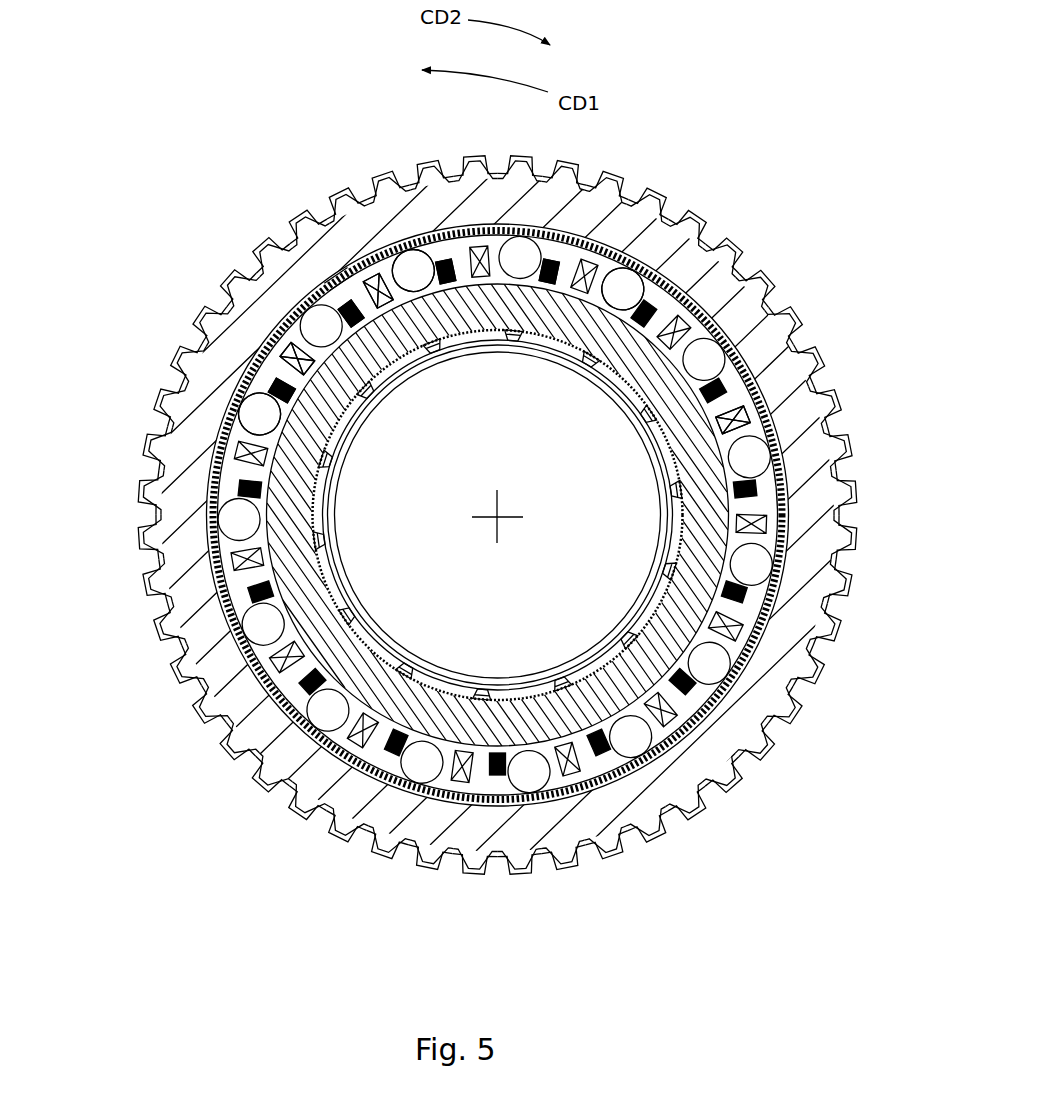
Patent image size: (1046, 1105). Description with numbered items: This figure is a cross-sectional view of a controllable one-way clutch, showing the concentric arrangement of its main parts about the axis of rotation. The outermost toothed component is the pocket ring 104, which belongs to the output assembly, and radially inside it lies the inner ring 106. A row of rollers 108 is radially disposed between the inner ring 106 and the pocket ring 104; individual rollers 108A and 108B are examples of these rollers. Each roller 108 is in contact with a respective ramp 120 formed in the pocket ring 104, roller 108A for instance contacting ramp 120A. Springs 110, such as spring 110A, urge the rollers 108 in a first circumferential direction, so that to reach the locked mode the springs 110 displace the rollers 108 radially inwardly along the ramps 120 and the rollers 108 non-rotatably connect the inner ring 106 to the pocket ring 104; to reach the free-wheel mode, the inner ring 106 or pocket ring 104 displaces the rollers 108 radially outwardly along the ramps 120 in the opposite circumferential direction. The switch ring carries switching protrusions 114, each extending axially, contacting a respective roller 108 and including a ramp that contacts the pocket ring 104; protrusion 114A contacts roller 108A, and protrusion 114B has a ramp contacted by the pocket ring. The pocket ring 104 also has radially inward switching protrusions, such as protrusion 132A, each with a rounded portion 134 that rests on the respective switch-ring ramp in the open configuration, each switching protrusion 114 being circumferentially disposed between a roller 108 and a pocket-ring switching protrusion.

The pocket ring 104 is at (720, 252).
The inner ring 106 is at (355, 318).
The rollers 108 is at (672, 285).
The roller 108A is at (412, 270).
The roller 108B is at (256, 414).
The springs 110 is at (627, 283).
The spring 110A is at (347, 295).
The switching protrusions 114 is at (547, 267).
The switching protrusion 114A is at (442, 255).
The switching protrusion 114B is at (258, 373).
The ramps 120 is at (782, 432).
The ramp 120A is at (383, 265).
The switching protrusion 132A is at (278, 352).
The rounded portion 134 is at (730, 413).